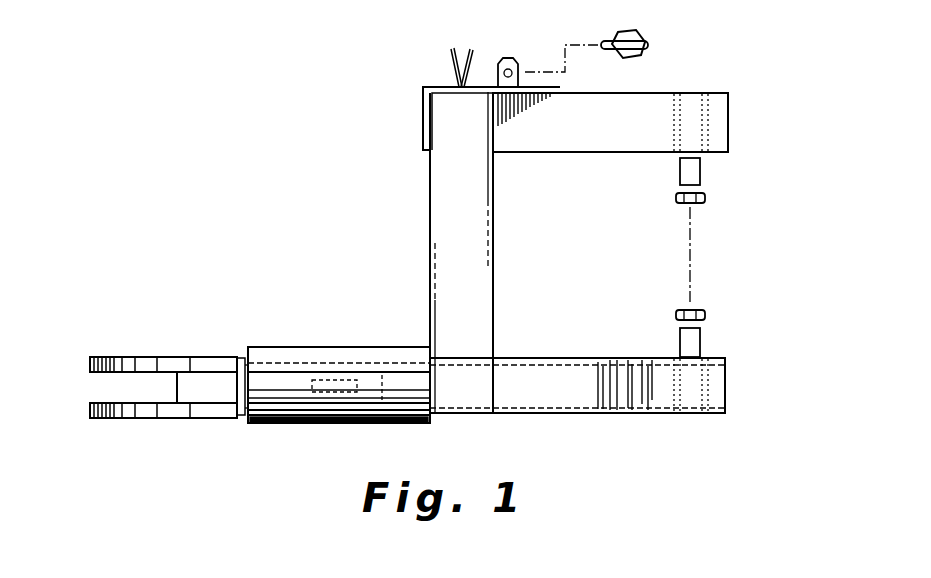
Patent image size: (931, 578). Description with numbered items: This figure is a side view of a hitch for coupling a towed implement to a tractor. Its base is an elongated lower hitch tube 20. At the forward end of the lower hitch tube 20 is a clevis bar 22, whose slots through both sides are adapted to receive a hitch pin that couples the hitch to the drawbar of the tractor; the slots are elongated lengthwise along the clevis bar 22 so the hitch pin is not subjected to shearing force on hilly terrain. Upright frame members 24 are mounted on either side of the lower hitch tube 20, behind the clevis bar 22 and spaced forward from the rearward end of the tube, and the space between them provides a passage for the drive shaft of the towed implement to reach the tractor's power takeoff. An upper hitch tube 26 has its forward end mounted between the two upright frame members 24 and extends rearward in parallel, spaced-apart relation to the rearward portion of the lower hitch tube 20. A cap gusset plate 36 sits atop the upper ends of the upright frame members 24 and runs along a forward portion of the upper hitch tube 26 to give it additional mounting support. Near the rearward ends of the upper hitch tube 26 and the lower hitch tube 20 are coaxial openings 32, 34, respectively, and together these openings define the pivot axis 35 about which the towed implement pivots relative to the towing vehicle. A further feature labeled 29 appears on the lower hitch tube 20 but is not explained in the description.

The lower hitch tube 20 is at (557, 413).
The clevis bar 22 is at (153, 418).
The upright frame members 24 is at (450, 210).
The upper hitch tube 26 is at (588, 153).
The bore in base bar 29 is at (573, 358).
The coaxial opening 32 is at (695, 93).
The coaxial opening 34 is at (697, 413).
The pivot axis 35 is at (690, 250).
The cap gusset plate 36 is at (423, 115).